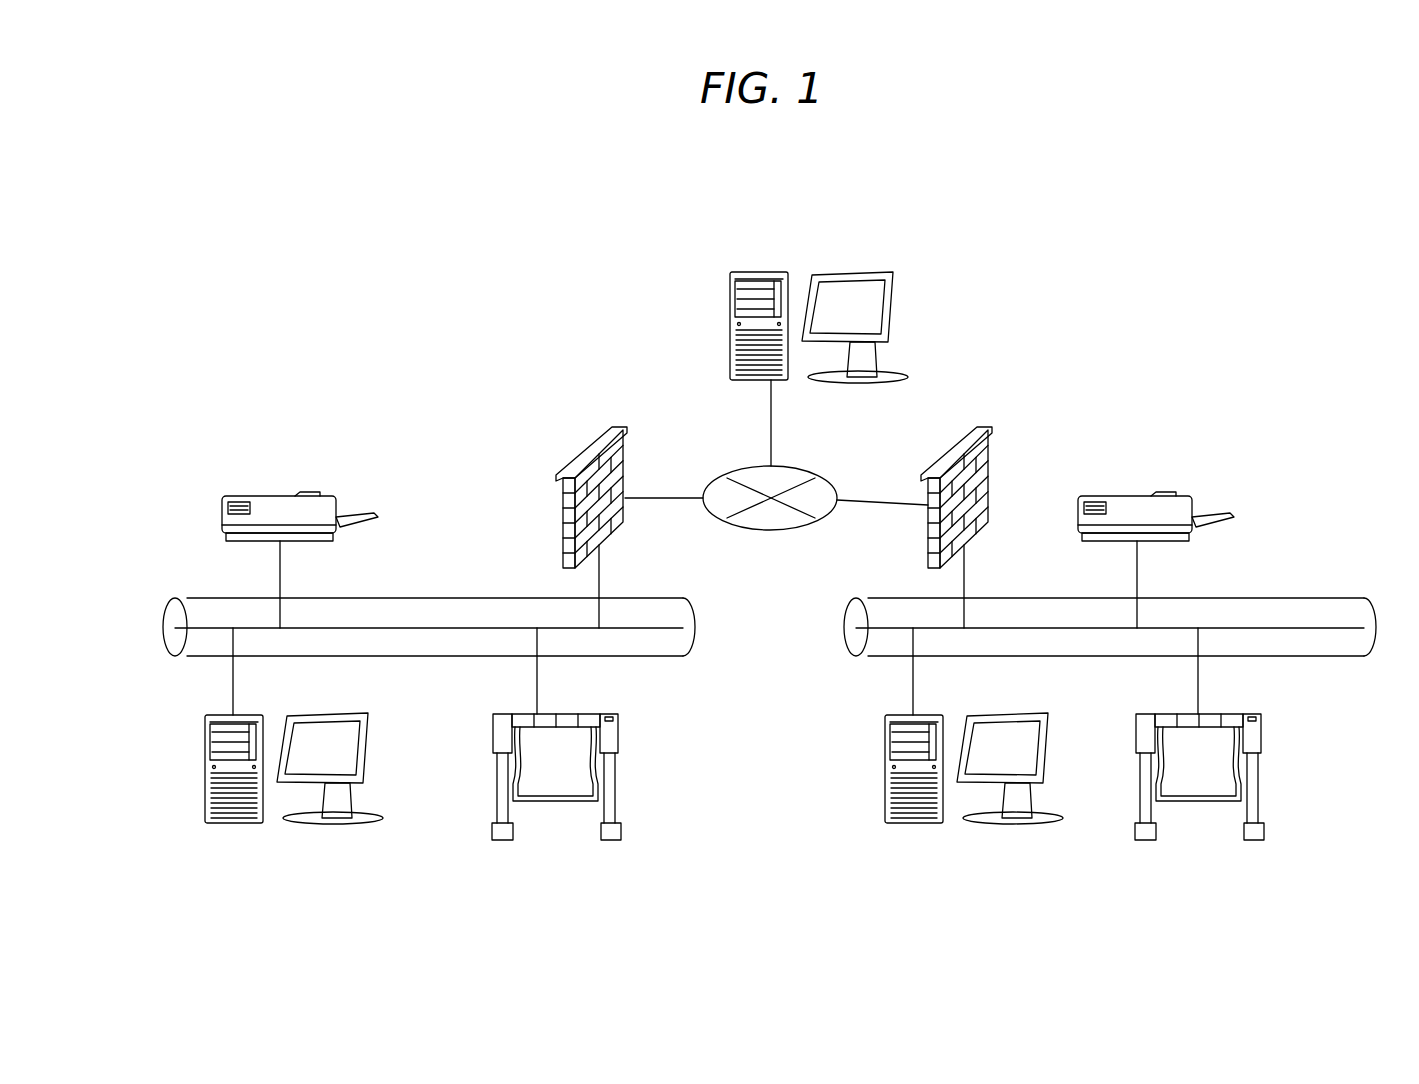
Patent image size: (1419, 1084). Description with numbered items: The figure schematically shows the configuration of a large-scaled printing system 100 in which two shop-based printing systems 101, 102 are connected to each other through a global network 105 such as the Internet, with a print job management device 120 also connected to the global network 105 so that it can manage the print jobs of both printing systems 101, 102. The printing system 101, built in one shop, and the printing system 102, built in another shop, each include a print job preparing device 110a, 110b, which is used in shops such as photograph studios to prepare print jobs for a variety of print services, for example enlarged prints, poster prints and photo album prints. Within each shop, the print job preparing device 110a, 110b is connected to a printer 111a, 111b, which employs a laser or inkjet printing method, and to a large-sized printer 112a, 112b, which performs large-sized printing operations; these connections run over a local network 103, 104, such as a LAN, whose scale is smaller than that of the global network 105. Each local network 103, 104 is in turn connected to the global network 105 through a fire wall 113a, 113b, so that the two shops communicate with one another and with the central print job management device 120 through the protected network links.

The large-scaled printing system 100 is at (1003, 238).
The printing system 101 is at (431, 447).
The printing system 102 is at (1261, 447).
The local network 103 is at (431, 598).
The local network 104 is at (1300, 598).
The global network 105 is at (835, 477).
The print job preparing device 110a is at (256, 823).
The print job preparing device 110b is at (936, 823).
The printer 111a is at (277, 496).
The printer 111b is at (1134, 496).
The large-sized printer 112a is at (503, 840).
The large-sized printer 112b is at (1146, 840).
The fire wall 113a is at (622, 428).
The fire wall 113b is at (987, 428).
The print job management device 120 is at (775, 268).